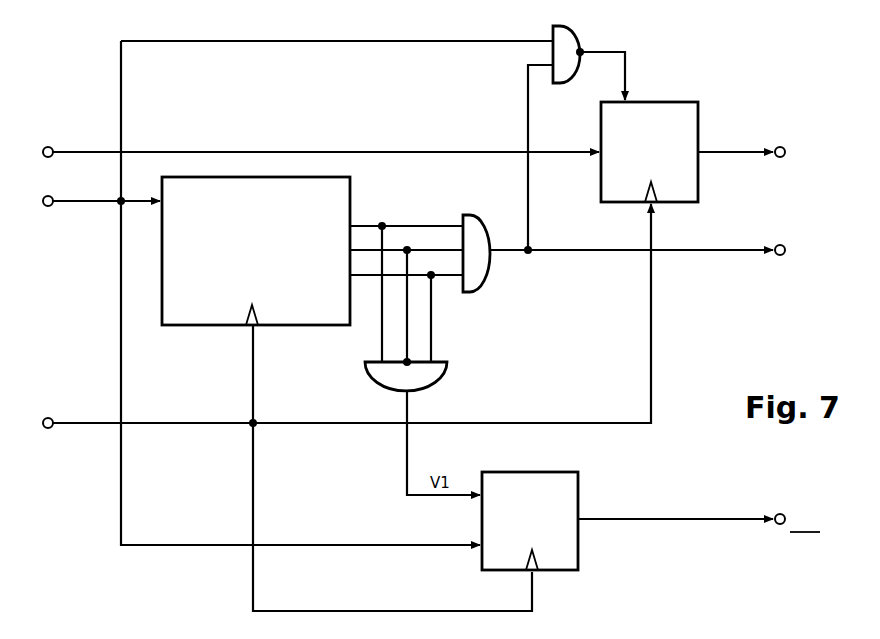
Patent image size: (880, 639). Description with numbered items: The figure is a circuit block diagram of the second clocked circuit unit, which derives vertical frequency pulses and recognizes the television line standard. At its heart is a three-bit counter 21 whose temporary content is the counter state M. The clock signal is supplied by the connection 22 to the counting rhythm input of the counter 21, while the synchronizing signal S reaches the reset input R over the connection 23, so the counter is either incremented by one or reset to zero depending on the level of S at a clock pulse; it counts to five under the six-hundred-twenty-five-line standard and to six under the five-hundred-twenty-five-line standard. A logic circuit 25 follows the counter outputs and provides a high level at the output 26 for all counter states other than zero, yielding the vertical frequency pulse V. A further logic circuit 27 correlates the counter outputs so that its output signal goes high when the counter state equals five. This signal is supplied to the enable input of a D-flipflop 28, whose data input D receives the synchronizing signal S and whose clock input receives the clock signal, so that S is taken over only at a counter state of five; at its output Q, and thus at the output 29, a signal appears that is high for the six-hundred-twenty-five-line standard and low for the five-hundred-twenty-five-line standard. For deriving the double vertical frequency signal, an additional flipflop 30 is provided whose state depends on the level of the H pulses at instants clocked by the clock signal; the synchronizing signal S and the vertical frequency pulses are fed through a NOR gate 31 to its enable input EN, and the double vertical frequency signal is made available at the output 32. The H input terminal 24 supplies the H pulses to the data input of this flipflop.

The 3-bit counter 21 is at (274, 249).
The connection 22 is at (335, 319).
The connection 23 is at (93, 214).
The horizontal sync input terminal H 24 is at (312, 140).
The logic circuit 25 is at (486, 242).
The output 26 is at (648, 239).
The further logic circuit 27 is at (425, 376).
The D-flipflop 28 is at (549, 515).
The output 29 is at (699, 520).
The flipflop 30 is at (655, 139).
The NOR gate 31 is at (584, 49).
The output 32 is at (756, 140).